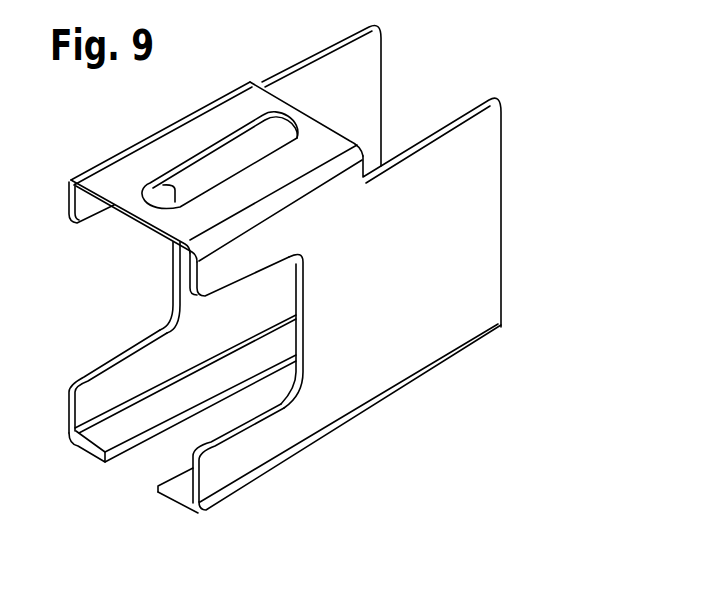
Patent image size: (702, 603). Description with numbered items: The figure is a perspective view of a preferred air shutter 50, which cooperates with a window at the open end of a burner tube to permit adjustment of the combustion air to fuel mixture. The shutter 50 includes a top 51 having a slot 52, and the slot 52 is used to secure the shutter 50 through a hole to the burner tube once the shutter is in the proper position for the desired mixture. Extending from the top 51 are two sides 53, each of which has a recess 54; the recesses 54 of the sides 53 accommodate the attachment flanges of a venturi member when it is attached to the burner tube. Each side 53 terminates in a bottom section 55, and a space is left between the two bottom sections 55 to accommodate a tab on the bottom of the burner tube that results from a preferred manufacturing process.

The air shutter 50 is at (537, 201).
The top 51 is at (132, 163).
The slot 52 is at (248, 124).
The side 53 is at (503, 290).
The recess 54 is at (178, 262).
The bottom section 55 is at (84, 454).